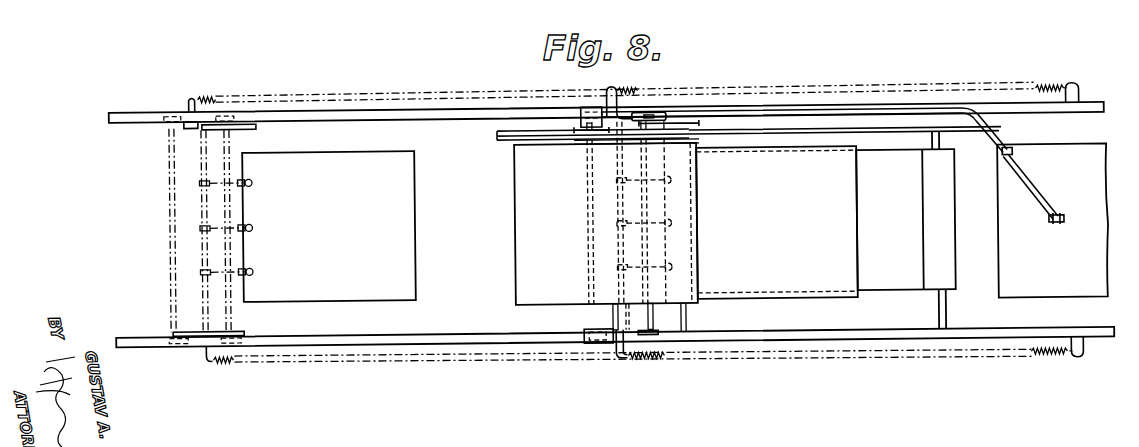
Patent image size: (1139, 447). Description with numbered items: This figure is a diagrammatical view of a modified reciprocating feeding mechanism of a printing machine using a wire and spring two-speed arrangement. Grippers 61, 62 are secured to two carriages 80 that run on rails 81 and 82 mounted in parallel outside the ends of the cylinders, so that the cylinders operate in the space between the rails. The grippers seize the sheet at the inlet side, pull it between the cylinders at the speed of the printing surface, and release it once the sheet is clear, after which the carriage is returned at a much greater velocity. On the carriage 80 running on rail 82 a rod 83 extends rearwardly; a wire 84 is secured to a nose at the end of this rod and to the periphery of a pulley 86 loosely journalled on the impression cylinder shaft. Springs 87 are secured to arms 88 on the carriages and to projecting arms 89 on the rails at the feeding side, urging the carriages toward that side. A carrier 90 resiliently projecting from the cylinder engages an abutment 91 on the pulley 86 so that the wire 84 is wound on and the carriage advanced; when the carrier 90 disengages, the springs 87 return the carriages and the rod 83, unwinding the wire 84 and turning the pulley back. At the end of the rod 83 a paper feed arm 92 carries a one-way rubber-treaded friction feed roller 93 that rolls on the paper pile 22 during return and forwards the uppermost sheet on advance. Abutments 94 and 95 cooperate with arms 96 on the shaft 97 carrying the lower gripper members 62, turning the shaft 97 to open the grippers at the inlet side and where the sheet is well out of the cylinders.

The paper pile 22 is at (1040, 293).
The gripper 61 is at (208, 190).
The lower gripper member 62 is at (212, 187).
The carriage 80 is at (193, 115).
The rail 81 is at (720, 340).
The rail 82 is at (425, 112).
The rod 83 is at (746, 110).
The wire 84 is at (880, 130).
The pulley 86 is at (498, 134).
The spring 87 is at (818, 93).
The arm 88 is at (206, 97).
The projecting arm 89 is at (1074, 90).
The carrier 90 is at (660, 138).
The abutment 91 is at (640, 138).
The paper feed arm 92 is at (1038, 176).
The friction feed roller 93 is at (1049, 223).
The abutment 94 is at (692, 118).
The abutment 95 is at (238, 126).
The arm 96 is at (650, 117).
The shaft 97 is at (230, 213).